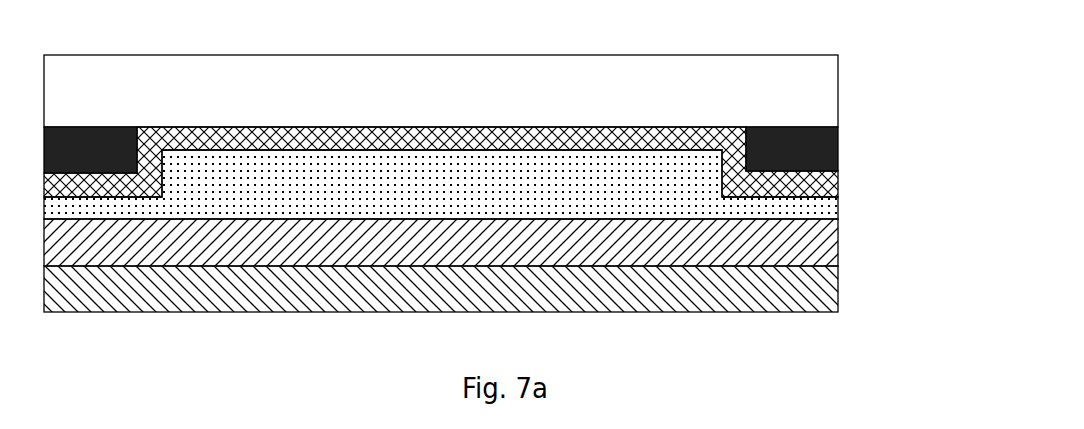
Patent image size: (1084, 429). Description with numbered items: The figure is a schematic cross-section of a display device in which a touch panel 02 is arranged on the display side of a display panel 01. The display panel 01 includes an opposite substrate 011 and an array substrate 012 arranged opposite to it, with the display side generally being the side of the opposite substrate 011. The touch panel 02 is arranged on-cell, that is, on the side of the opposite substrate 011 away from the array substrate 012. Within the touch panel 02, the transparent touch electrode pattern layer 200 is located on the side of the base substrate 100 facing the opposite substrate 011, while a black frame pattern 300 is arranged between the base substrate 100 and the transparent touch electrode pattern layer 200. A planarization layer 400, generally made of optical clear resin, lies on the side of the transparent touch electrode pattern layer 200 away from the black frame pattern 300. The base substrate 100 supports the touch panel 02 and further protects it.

The base substrate 100 is at (803, 91).
The black frame pattern 300 is at (838, 147).
The transparent touch electrode pattern layer 200 is at (806, 181).
The planarization layer 400 is at (481, 184).
The opposite substrate 011 is at (805, 241).
The array substrate 012 is at (481, 289).
The touch panel 02 is at (502, 137).
The display panel 01 is at (502, 265).